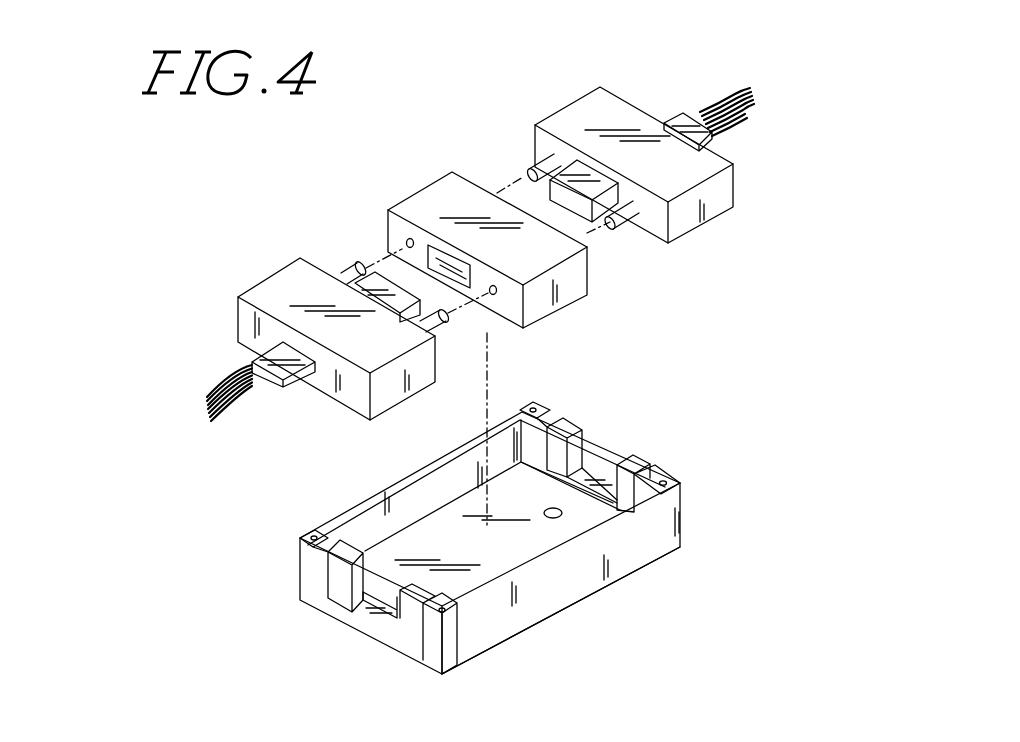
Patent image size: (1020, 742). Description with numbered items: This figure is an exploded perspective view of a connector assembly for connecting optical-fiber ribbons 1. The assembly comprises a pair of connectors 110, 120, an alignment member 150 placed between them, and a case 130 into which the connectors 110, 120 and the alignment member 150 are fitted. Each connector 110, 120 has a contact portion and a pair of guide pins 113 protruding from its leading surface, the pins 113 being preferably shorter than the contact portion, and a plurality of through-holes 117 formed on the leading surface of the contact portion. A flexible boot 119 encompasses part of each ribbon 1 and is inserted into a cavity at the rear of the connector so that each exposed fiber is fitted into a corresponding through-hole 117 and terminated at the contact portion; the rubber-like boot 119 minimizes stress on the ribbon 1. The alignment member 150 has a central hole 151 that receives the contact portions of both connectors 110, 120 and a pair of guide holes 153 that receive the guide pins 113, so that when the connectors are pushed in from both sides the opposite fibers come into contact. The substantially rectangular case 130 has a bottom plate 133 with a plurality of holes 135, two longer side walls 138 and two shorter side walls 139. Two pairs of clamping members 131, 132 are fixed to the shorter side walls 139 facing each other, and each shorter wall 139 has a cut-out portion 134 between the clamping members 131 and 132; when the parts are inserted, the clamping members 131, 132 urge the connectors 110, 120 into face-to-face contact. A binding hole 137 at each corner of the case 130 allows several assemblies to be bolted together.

The optical-fiber ribbon 1 is at (225, 388).
The connector 110 is at (282, 300).
The guide pins 113 is at (350, 278).
The through-holes 117 is at (533, 172).
The boot 119 is at (255, 352).
The connector 120 is at (577, 95).
The case 130 is at (505, 640).
The clamping member 131 is at (410, 605).
The clamping member 132 is at (300, 542).
The bottom plate 133 is at (440, 548).
The cut-out portion 134 is at (365, 605).
The holes 135 is at (560, 514).
The binding hole 137 is at (668, 481).
The longer side walls 138 is at (570, 580).
The shorter side walls 139 is at (603, 468).
The alignment member 150 is at (425, 200).
The central hole 151 is at (460, 276).
The guide holes 153 is at (407, 242).